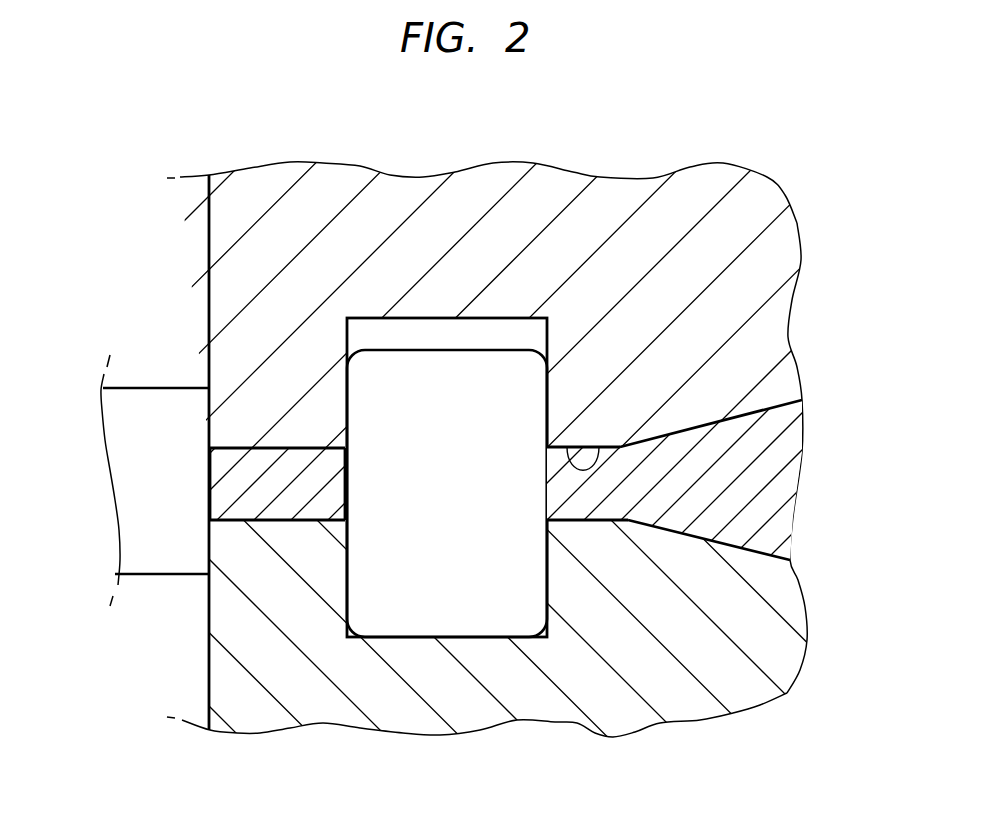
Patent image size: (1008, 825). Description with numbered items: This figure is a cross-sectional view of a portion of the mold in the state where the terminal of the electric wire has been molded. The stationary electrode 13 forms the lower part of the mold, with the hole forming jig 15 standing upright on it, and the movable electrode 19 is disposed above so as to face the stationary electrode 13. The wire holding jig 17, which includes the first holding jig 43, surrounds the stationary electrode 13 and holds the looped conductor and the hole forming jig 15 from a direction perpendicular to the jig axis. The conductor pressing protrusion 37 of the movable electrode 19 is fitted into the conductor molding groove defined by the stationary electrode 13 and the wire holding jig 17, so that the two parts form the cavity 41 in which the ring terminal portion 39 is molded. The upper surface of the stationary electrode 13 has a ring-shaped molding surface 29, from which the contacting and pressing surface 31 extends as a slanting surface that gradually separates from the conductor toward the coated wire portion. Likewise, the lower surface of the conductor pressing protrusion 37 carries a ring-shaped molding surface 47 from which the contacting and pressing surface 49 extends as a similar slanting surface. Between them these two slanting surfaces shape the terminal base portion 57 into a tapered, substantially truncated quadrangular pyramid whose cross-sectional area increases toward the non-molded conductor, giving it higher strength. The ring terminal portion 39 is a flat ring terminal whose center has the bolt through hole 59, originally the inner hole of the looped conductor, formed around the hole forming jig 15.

The stationary electrode 13 is at (186, 671).
The hole forming jig 15 is at (423, 380).
The wire holding jig 17 is at (150, 382).
The movable electrode 19 is at (190, 225).
The ring-shaped molding surface 29 is at (580, 520).
The contacting and pressing surface 31 is at (695, 534).
The conductor pressing protrusion 37 is at (210, 318).
The ring terminal portion 39 is at (313, 522).
The cavity 41 is at (249, 455).
The first holding jig 43 is at (140, 485).
The ring-shaped molding surface 47 is at (601, 447).
The contacting and pressing surface 49 is at (760, 462).
The terminal base portion 57 is at (760, 462).
The bolt through hole 59 is at (540, 473).